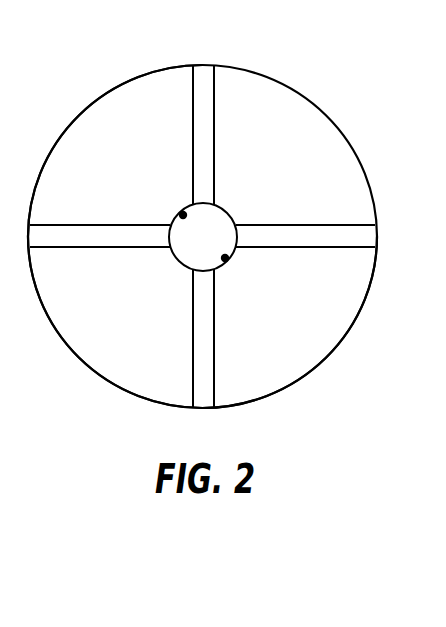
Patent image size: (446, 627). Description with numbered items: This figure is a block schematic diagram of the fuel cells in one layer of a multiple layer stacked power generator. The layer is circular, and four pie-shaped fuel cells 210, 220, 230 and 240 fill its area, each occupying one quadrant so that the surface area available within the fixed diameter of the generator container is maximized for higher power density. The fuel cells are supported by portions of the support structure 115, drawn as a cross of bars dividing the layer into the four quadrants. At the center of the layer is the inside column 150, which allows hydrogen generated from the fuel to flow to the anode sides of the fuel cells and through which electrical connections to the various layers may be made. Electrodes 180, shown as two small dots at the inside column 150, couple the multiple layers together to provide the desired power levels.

The support structure 115 is at (202, 75).
The inside column 150 is at (233, 211).
The electrodes 180 is at (180, 212).
The fuel cell 210 is at (300, 107).
The fuel cell 220 is at (298, 365).
The fuel cell 230 is at (108, 365).
The fuel cell 240 is at (108, 107).